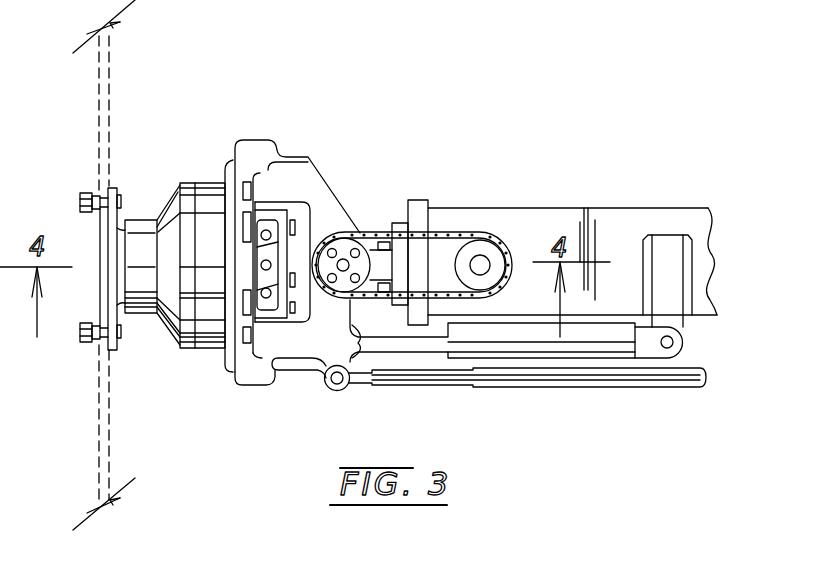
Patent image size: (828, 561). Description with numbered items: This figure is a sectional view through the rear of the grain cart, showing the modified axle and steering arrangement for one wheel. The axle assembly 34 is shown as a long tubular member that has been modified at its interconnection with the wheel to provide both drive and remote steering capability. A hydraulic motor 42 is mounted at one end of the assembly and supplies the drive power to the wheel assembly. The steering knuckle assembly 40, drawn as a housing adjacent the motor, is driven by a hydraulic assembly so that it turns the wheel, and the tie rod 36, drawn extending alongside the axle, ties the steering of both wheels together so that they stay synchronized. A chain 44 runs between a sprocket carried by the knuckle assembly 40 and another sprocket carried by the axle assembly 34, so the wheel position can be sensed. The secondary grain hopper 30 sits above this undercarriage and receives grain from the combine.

The secondary grain hopper 30 is at (613, 330).
The axle assembly 34 is at (512, 208).
The tie rod 36 is at (580, 388).
The knuckle assembly 40 is at (299, 156).
The hydraulic motor 42 is at (192, 181).
The chain 44 is at (360, 233).